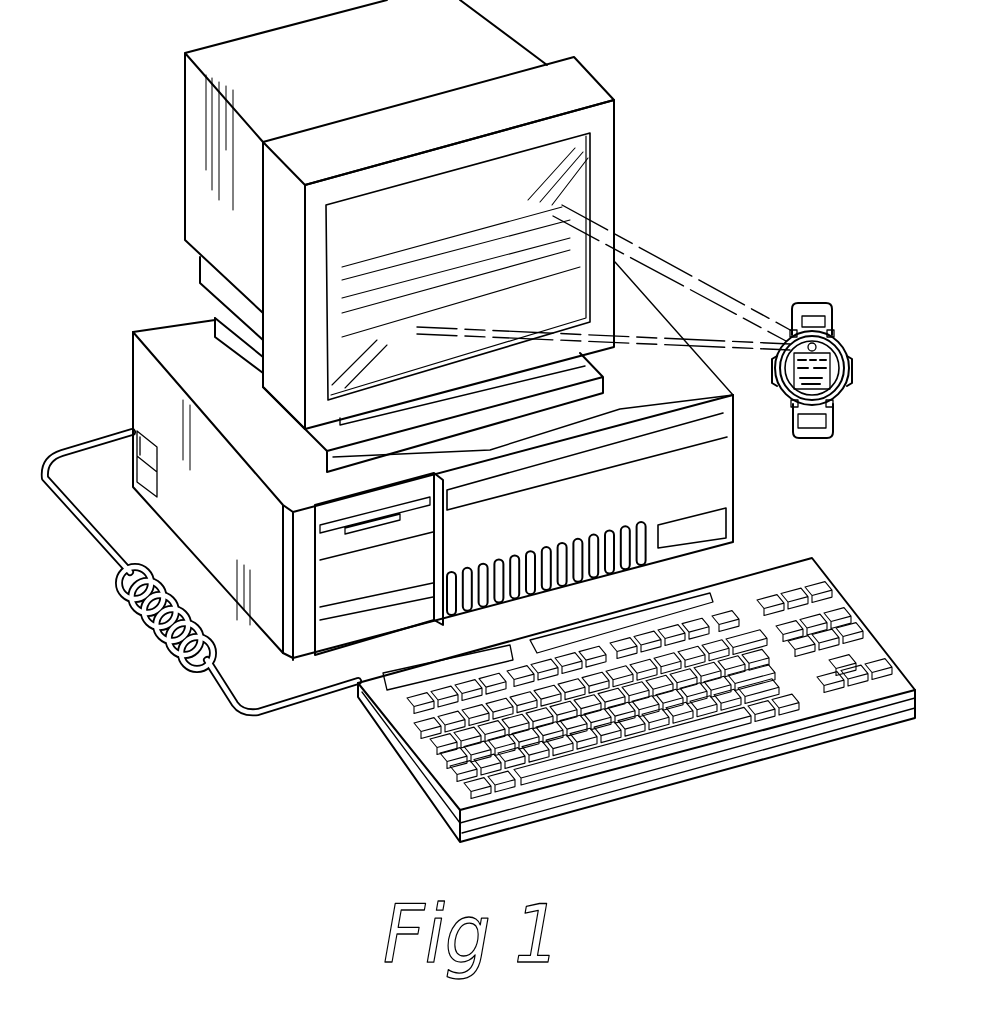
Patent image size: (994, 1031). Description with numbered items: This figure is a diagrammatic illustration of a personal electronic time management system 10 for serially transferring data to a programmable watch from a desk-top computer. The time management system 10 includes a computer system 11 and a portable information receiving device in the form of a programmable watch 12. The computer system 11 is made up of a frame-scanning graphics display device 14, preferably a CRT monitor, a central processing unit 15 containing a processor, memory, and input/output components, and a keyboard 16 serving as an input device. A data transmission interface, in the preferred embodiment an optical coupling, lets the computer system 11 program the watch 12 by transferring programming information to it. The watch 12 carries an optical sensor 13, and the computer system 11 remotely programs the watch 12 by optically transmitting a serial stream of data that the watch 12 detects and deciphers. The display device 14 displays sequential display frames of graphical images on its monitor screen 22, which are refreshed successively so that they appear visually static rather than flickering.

The personal electronic time management system 10 is at (733, 217).
The computer system 11 is at (142, 293).
The programmable watch 12 is at (815, 295).
The optical sensor 13 is at (833, 343).
The frame-scanning graphics display device 14 is at (578, 87).
The central processing unit 15 is at (717, 490).
The keyboard 16 is at (838, 592).
The monitor screen 22 is at (572, 183).